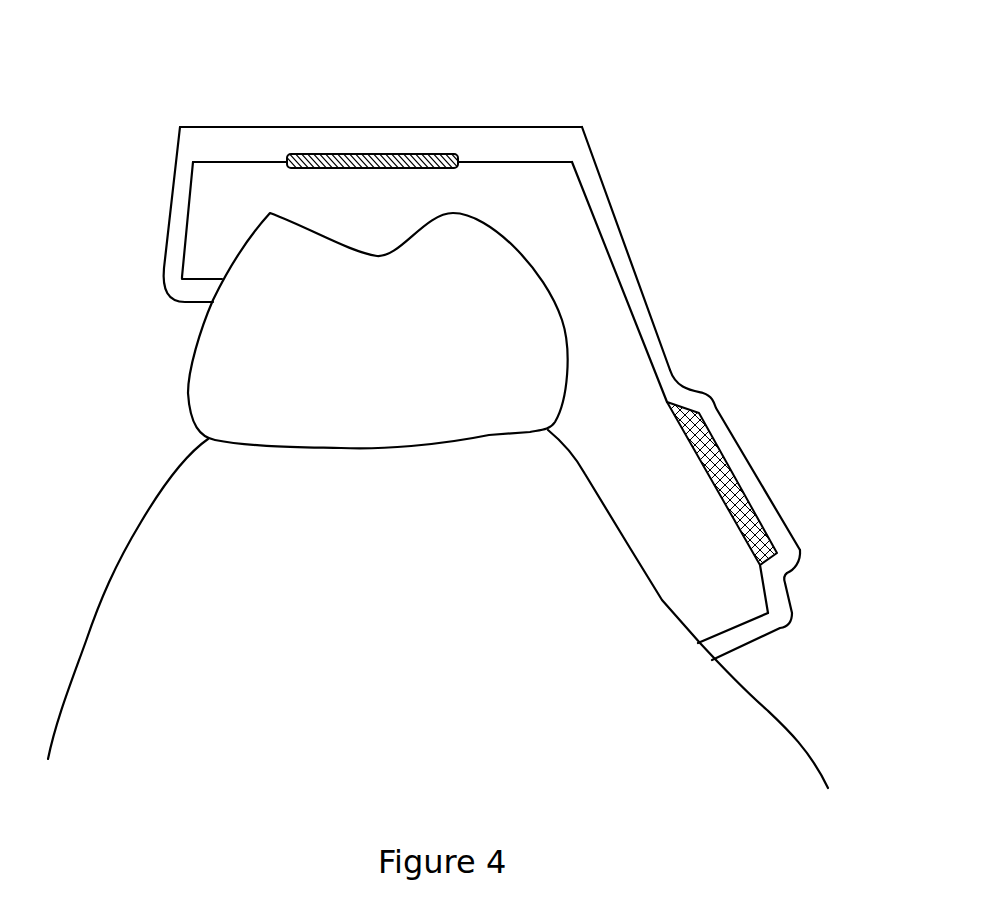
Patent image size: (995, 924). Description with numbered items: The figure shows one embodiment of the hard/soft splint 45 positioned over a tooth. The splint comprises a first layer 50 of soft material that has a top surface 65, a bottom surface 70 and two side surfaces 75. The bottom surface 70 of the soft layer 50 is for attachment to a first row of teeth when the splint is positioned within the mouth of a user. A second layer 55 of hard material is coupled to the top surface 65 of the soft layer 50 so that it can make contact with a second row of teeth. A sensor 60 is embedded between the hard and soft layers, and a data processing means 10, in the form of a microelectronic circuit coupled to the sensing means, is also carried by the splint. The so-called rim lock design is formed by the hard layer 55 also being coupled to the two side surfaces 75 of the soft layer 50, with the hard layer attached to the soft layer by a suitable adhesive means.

The hard/soft splint 45 is at (660, 233).
The second layer of hard material 55 is at (235, 145).
The top surface 65 is at (270, 160).
The sensor 60 is at (390, 157).
The side surfaces 75 is at (177, 208).
The first layer of soft material 50 is at (203, 258).
The data processing means 10 is at (735, 447).
The bottom surface 70 is at (662, 596).